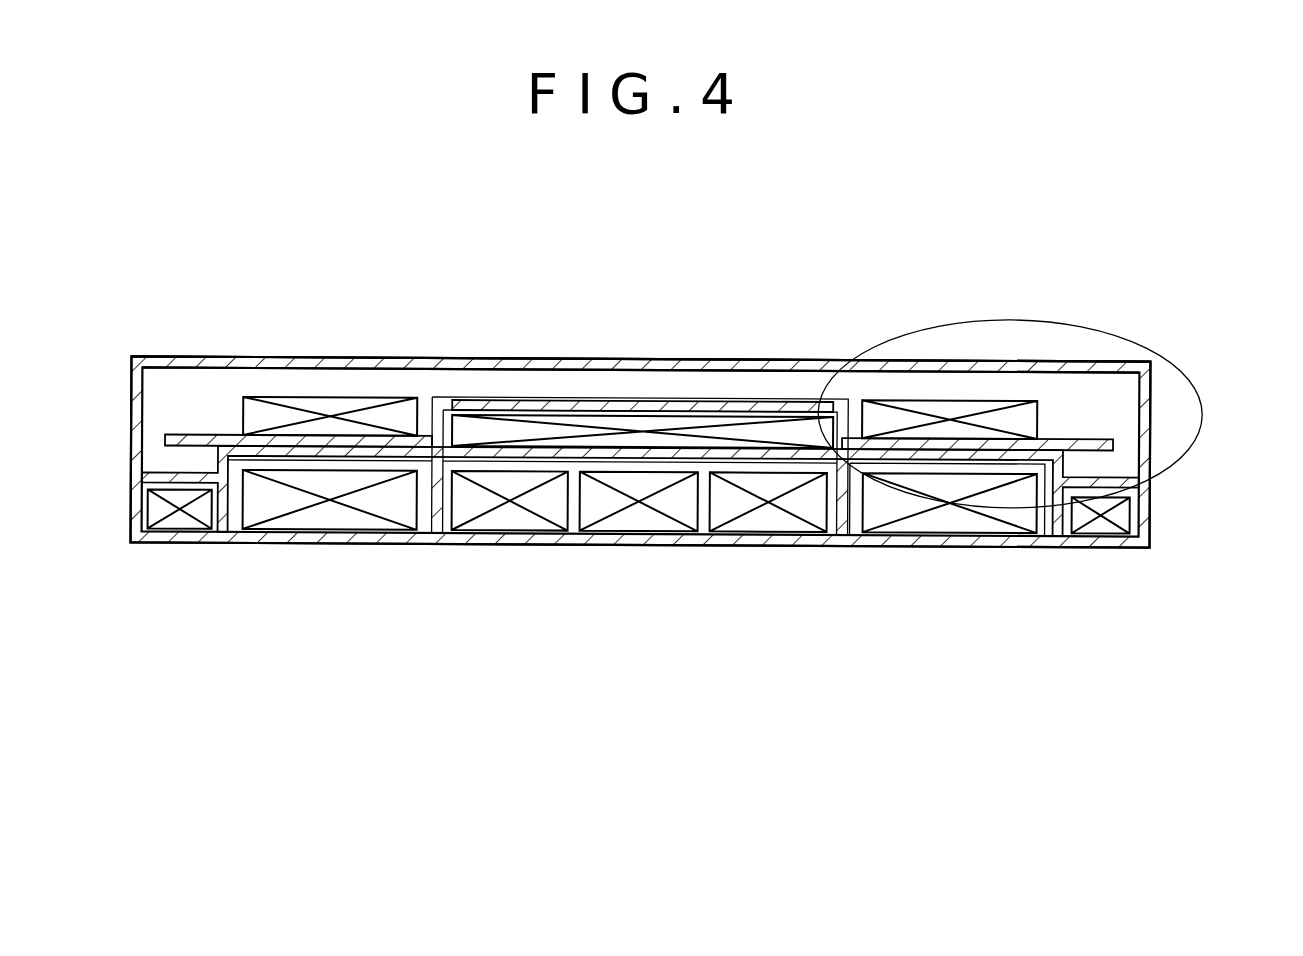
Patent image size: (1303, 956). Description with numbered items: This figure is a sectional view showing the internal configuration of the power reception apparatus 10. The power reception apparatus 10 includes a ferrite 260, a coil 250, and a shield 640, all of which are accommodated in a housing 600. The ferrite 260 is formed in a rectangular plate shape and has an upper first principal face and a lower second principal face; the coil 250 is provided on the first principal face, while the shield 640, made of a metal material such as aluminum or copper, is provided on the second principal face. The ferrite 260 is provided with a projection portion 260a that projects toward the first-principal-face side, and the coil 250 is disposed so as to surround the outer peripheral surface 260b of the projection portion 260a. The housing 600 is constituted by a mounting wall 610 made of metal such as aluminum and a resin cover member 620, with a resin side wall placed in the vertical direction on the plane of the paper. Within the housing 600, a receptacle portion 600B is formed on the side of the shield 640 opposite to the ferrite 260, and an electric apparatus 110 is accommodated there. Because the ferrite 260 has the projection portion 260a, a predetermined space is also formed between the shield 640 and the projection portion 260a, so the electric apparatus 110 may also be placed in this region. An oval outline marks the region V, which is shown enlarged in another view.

The power reception apparatus 10 is at (1132, 572).
The electric apparatus 110 is at (640, 422).
The coil 250 is at (320, 399).
The ferrite 260 is at (900, 272).
The projection portion 260a is at (765, 410).
The outer peripheral surface 260b is at (205, 437).
The housing 600 is at (1138, 372).
The receptacle portion 600B is at (705, 517).
The mounting wall 610 is at (830, 452).
The cover member 620 is at (1022, 368).
The shield 640 is at (515, 455).
The region V is at (1203, 413).